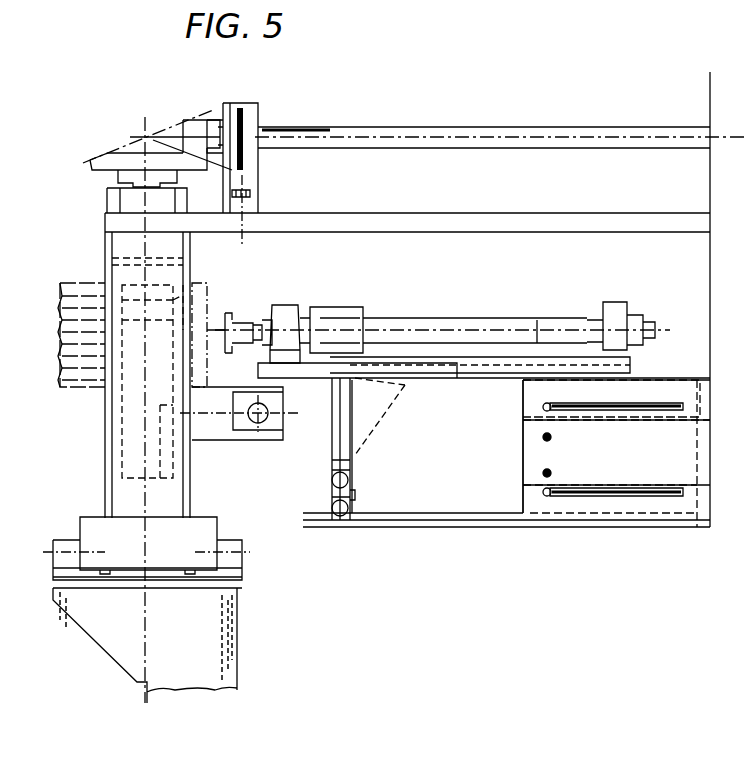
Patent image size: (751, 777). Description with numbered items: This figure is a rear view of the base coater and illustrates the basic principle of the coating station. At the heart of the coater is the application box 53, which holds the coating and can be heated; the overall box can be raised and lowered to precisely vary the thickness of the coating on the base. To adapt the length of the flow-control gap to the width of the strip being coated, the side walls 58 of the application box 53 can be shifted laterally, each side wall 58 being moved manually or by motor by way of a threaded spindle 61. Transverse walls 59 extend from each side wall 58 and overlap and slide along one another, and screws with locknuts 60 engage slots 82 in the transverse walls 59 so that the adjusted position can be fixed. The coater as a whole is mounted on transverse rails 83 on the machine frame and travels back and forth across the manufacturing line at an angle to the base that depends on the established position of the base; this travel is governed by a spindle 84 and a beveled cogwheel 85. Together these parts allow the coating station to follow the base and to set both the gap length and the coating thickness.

The application box 53 is at (420, 487).
The side wall 58 is at (353, 453).
The transverse wall 59 is at (467, 477).
The screws with locknuts 60 is at (540, 405).
The threaded spindle 61 is at (472, 327).
The slot 82 is at (623, 403).
The transverse rail 83 is at (227, 550).
The spindle 84 is at (623, 130).
The beveled cogwheel 85 is at (168, 127).